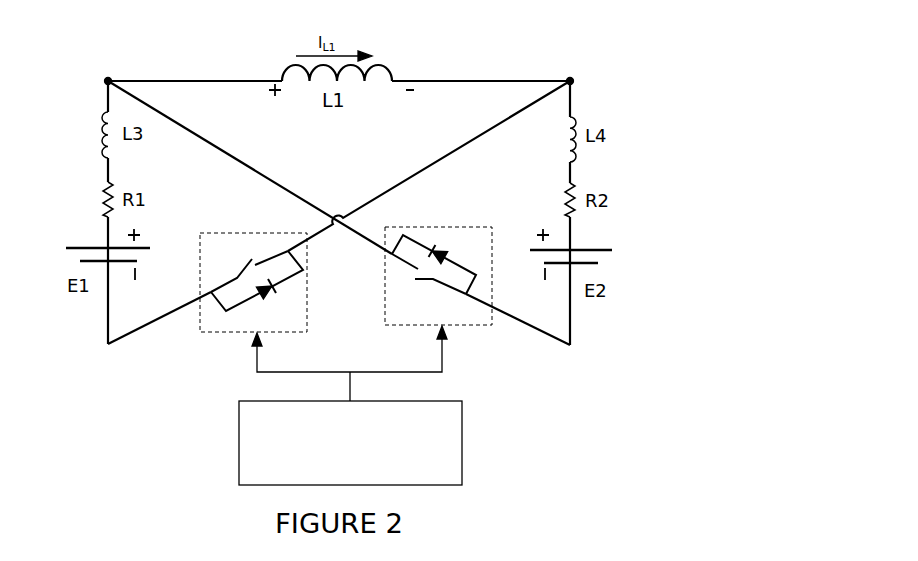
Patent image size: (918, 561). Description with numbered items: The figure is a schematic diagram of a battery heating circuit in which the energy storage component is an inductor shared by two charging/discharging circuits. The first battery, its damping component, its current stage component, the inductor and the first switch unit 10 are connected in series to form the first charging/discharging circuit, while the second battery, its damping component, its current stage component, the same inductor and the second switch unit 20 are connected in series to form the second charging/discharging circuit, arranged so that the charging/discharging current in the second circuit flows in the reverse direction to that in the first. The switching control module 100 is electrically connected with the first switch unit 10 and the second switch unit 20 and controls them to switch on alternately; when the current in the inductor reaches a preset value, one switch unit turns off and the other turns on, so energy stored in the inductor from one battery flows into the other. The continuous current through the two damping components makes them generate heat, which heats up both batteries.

The first switch unit 10 is at (253, 284).
The second switch unit 20 is at (438, 278).
The switching control module 100 is at (334, 480).